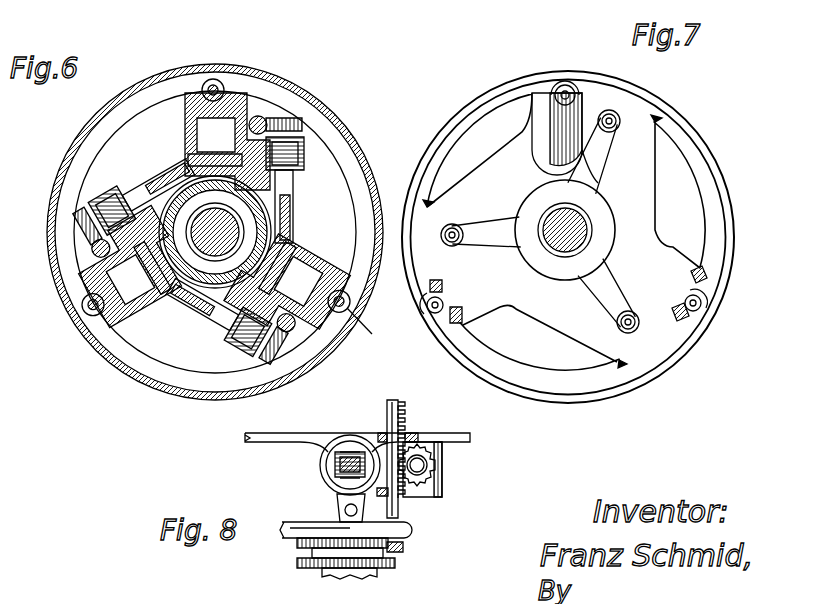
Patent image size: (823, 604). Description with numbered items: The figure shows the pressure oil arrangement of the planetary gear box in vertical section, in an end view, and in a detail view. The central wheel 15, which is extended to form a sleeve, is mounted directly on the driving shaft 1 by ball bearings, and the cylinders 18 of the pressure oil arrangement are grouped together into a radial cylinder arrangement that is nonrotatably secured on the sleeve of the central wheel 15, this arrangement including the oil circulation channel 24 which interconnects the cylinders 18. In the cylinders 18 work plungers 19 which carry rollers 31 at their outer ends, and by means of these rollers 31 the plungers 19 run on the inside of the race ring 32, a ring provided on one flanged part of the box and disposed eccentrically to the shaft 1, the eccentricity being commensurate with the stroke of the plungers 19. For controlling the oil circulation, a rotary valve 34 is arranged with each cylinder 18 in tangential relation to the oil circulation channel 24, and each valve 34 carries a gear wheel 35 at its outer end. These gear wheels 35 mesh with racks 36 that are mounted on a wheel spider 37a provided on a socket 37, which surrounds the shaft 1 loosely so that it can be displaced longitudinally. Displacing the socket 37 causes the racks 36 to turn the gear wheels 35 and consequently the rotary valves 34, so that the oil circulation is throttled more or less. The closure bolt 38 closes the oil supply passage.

In FIG. 6, the driving shaft 1 is at (213, 242).
In FIG. 7, the driving shaft 1 is at (585, 238).
In FIG. 6, the central wheel 15 is at (284, 193).
In FIG. 6, the cylinders 18 is at (181, 112).
In FIG. 7, the cylinders 18 is at (538, 120).
In FIG. 8, the cylinders 18 is at (320, 465).
In FIG. 6, the plungers 19 is at (193, 92).
In FIG. 7, the plungers 19 is at (705, 278).
In FIG. 8, the plungers 19 is at (336, 450).
In FIG. 6, the oil circulation channel 24 is at (165, 192).
In FIG. 6, the rollers 31 is at (223, 84).
In FIG. 7, the rollers 31 is at (578, 88).
In FIG. 8, the rollers 31 is at (352, 460).
In FIG. 6, the race ring 32 is at (356, 156).
In FIG. 7, the race ring 32 is at (498, 90).
In FIG. 6, the rotary valve 34 is at (160, 192).
In FIG. 6, the gear wheels 35 is at (303, 142).
In FIG. 8, the gear wheels 35 is at (442, 466).
In FIG. 6, the racks 36 is at (263, 117).
In FIG. 7, the racks 36 is at (618, 114).
In FIG. 8, the racks 36 is at (406, 420).
In FIG. 7, the socket 37 is at (603, 226).
In FIG. 8, the socket 37 is at (312, 553).
In FIG. 7, the wheel spider 37a is at (506, 222).
In FIG. 8, the wheel spider 37a is at (414, 530).
In FIG. 7, the closure bolt 38 is at (553, 105).
In FIG. 8, the closure bolt 38 is at (340, 504).